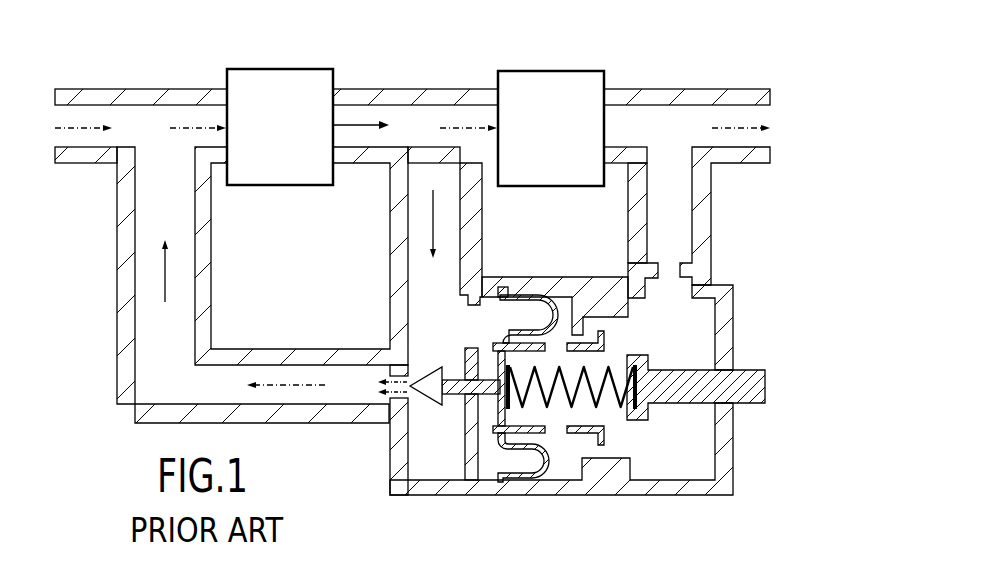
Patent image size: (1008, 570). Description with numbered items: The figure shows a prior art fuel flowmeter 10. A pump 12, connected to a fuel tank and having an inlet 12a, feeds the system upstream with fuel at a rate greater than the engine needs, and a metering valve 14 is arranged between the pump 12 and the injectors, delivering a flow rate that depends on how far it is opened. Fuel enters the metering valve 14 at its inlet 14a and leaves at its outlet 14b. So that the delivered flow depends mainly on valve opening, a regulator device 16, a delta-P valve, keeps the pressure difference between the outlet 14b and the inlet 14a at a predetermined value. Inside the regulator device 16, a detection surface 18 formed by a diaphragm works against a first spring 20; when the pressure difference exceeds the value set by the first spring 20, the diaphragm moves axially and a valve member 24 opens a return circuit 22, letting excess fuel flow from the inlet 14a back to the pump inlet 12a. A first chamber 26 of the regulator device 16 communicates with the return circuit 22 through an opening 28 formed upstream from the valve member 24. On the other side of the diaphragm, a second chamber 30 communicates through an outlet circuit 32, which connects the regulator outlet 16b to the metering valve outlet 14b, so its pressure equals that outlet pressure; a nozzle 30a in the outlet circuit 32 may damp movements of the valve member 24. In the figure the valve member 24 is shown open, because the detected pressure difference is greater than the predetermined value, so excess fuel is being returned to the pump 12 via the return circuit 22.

The flowmeter 10 is at (705, 54).
The pump 12 is at (267, 135).
The inlet of the pump 12a is at (177, 118).
The metering valve 14 is at (540, 137).
The inlet of the metering valve 14a is at (423, 118).
The outlet of the metering valve 14b is at (652, 118).
The regulator device 16 is at (750, 465).
The outlet of the regulator device 16b is at (668, 297).
The detection surface 18 is at (520, 485).
The first spring 20 is at (592, 432).
The return circuit 22 is at (423, 271).
The valve member 24 is at (417, 393).
The first chamber 26 is at (509, 314).
The opening 28 is at (472, 327).
The second chamber 30 is at (562, 312).
The nozzle 30a is at (665, 268).
The outlet circuit 32 is at (673, 203).